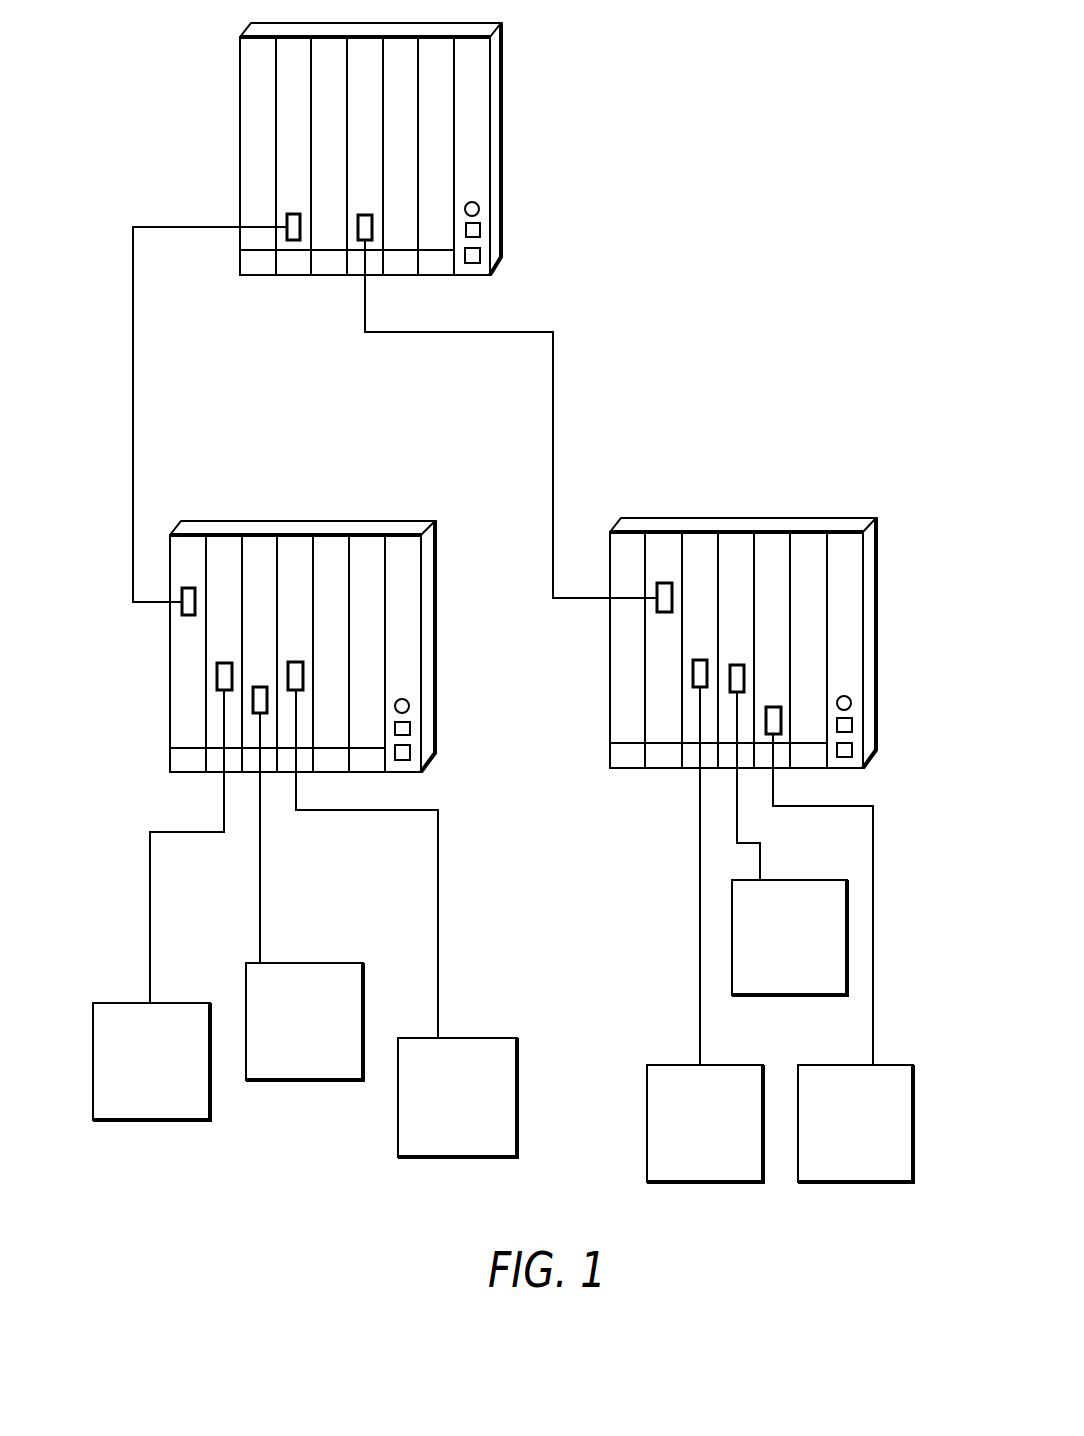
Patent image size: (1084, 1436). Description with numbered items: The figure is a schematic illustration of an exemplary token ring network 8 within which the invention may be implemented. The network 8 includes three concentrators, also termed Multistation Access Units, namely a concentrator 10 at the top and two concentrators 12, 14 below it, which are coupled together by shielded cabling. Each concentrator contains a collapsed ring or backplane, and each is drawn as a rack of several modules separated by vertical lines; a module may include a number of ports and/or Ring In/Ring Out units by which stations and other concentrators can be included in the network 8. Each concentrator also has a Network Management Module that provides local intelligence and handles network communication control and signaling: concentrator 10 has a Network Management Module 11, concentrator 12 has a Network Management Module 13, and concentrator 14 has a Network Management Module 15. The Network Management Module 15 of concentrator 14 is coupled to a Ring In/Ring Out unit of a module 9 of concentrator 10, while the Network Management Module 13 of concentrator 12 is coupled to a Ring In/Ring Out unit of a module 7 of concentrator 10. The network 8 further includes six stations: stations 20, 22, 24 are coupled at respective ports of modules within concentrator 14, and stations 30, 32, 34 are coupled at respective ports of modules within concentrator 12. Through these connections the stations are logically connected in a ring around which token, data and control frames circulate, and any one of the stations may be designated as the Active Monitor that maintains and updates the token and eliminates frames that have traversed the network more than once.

The module 7 is at (374, 170).
The token ring network 8 is at (792, 215).
The module 9 is at (300, 170).
The concentrator 10 is at (504, 108).
The Network Management Module 11 is at (270, 170).
The concentrator 12 is at (876, 603).
The Network Management Module 13 is at (678, 567).
The concentrator 14 is at (435, 605).
The Network Management Module 15 is at (202, 572).
The station 20 is at (164, 1107).
The station 22 is at (317, 1066).
The station 24 is at (470, 1142).
The station 30 is at (719, 1167).
The station 32 is at (869, 1166).
The station 34 is at (804, 980).